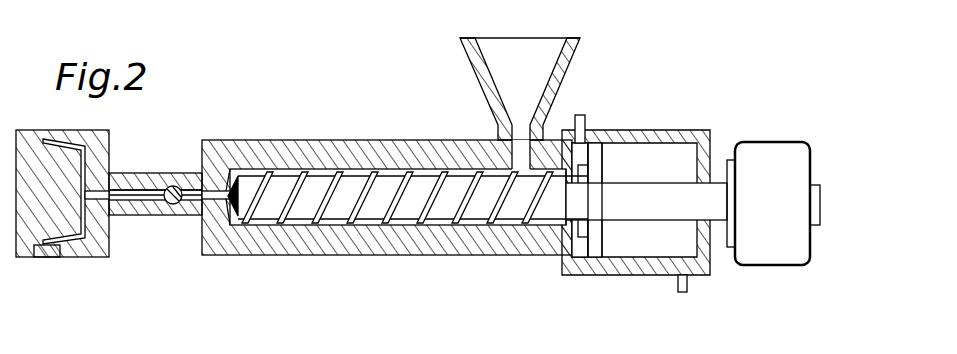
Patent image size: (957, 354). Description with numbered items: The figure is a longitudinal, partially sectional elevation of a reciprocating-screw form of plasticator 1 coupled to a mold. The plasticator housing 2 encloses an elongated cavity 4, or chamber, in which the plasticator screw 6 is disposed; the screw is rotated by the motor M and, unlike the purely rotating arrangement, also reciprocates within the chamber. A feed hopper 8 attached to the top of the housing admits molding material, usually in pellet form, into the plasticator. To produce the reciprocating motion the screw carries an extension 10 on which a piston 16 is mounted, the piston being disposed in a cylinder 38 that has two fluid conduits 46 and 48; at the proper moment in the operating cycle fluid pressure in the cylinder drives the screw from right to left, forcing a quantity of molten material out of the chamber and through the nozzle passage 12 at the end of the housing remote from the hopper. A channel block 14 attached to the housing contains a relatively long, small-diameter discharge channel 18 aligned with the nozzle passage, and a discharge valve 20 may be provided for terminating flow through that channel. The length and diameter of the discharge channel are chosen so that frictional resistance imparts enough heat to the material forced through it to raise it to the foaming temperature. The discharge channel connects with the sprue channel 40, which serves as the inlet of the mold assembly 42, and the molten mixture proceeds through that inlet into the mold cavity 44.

The plasticator 1 is at (490, 187).
The plasticator housing 2 is at (318, 148).
The elongated cavity 4 is at (385, 170).
The plasticator screw 6 is at (302, 215).
The feed hopper 8 is at (578, 58).
The extension 10 is at (665, 213).
The nozzle passage 12 is at (200, 197).
The channel block 14 is at (126, 178).
The piston 16 is at (602, 250).
The discharge channel 18 is at (147, 200).
The discharge valve 20 is at (173, 186).
The cylinder 38 is at (657, 132).
The sprue channel 40 is at (92, 198).
The mold assembly 42 is at (62, 130).
The mold cavity 44 is at (54, 247).
The fluid conduit 46 is at (585, 123).
The fluid conduit 48 is at (687, 292).
The motor M is at (783, 143).